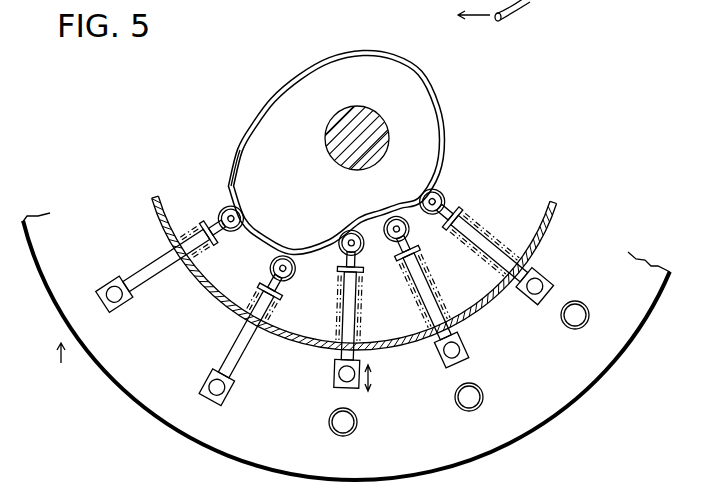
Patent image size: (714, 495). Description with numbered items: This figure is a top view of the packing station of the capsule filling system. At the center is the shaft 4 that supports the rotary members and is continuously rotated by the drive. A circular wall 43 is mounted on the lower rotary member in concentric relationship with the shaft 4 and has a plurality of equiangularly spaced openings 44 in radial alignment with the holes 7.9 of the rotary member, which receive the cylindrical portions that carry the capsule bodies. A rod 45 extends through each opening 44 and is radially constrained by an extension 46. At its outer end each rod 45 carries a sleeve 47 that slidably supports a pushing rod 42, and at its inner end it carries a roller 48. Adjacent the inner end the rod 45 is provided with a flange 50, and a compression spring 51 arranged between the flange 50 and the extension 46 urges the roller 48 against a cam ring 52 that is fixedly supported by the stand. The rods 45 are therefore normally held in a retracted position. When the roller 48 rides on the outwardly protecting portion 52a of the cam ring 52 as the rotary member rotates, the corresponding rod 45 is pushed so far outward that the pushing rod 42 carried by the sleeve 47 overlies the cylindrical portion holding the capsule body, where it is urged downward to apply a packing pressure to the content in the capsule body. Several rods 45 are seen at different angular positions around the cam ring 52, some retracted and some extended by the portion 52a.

The shaft 4 is at (367, 112).
The cam ring 52 is at (440, 98).
The outwardly protecting portion of the cam ring 52a is at (252, 202).
The circular wall 43 is at (558, 207).
The openings 44 is at (167, 268).
The rod 45 is at (350, 297).
The extension 46 is at (333, 343).
The sleeve 47 is at (333, 370).
The roller 48 is at (339, 250).
The flange 50 is at (407, 243).
The compression spring 51 is at (430, 273).
The pushing rod 42 is at (356, 390).
The hole 7.9 is at (589, 308).